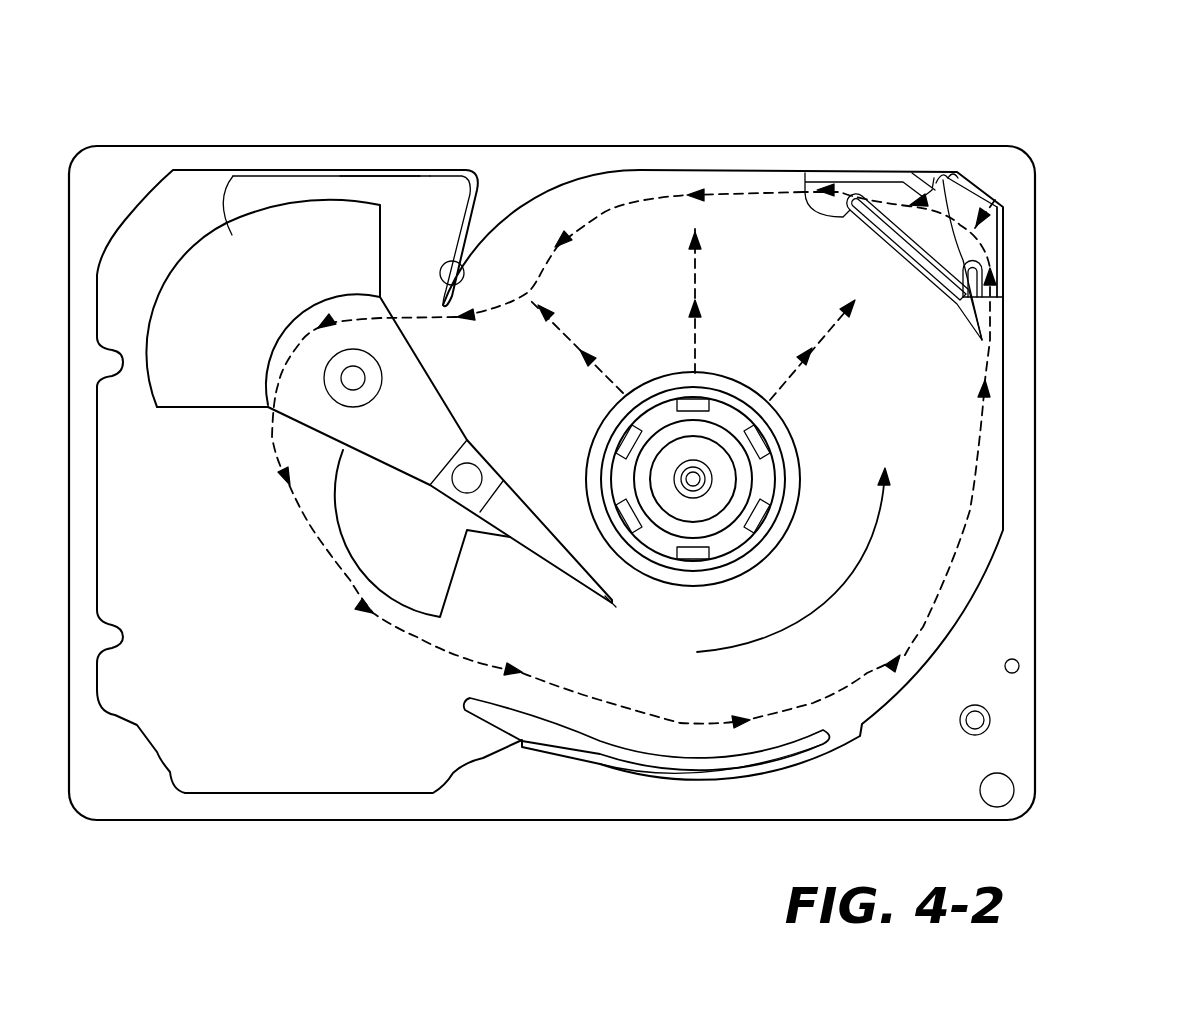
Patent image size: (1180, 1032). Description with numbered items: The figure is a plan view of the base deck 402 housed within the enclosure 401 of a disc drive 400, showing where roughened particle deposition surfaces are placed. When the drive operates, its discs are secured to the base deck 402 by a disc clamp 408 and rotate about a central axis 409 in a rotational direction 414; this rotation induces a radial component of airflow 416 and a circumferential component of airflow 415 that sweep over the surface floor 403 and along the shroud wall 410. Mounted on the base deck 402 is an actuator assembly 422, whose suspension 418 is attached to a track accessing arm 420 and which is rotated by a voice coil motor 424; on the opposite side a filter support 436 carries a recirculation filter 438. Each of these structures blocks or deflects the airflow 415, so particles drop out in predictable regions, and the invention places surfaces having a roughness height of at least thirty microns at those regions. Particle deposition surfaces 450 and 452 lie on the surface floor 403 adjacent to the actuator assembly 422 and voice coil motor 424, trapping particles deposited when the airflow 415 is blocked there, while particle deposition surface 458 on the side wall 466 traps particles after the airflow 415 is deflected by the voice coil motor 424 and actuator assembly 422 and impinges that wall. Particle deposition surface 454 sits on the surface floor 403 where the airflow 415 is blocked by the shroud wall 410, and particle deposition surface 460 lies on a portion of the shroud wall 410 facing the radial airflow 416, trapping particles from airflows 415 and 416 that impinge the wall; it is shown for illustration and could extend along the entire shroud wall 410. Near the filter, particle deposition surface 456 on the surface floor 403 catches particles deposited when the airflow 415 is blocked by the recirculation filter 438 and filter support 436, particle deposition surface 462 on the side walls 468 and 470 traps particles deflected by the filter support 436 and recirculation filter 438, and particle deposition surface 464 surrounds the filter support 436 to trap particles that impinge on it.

The disc drive 400 is at (862, 84).
The enclosure 401 is at (1035, 650).
The base deck 402 is at (1010, 630).
The surface floor 403 is at (900, 392).
The disc clamp 408 is at (760, 475).
The central axis 409 is at (692, 490).
The shroud wall 410 is at (638, 170).
The rotational direction 414 is at (860, 574).
The circumferential component of airflow 415 is at (403, 635).
The radial component of airflow 416 is at (610, 385).
The suspension 418 is at (537, 533).
The track accessing arm 420 is at (460, 395).
The actuator assembly 422 is at (407, 397).
The voice coil motor 424 is at (270, 250).
The filter support 436 is at (963, 300).
The recirculation filter 438 is at (948, 210).
The particle deposition surface 450 is at (422, 207).
The particle deposition surface 452 is at (383, 520).
The particle deposition surface 454 is at (688, 772).
The particle deposition surface 456 is at (1003, 205).
The particle deposition surface 458 is at (365, 172).
The particle deposition surface 460 is at (680, 765).
The particle deposition surface 462 is at (972, 182).
The particle deposition surface 464 is at (920, 270).
The side wall 466 is at (305, 170).
The side wall 468 is at (870, 173).
The side wall 470 is at (1005, 250).